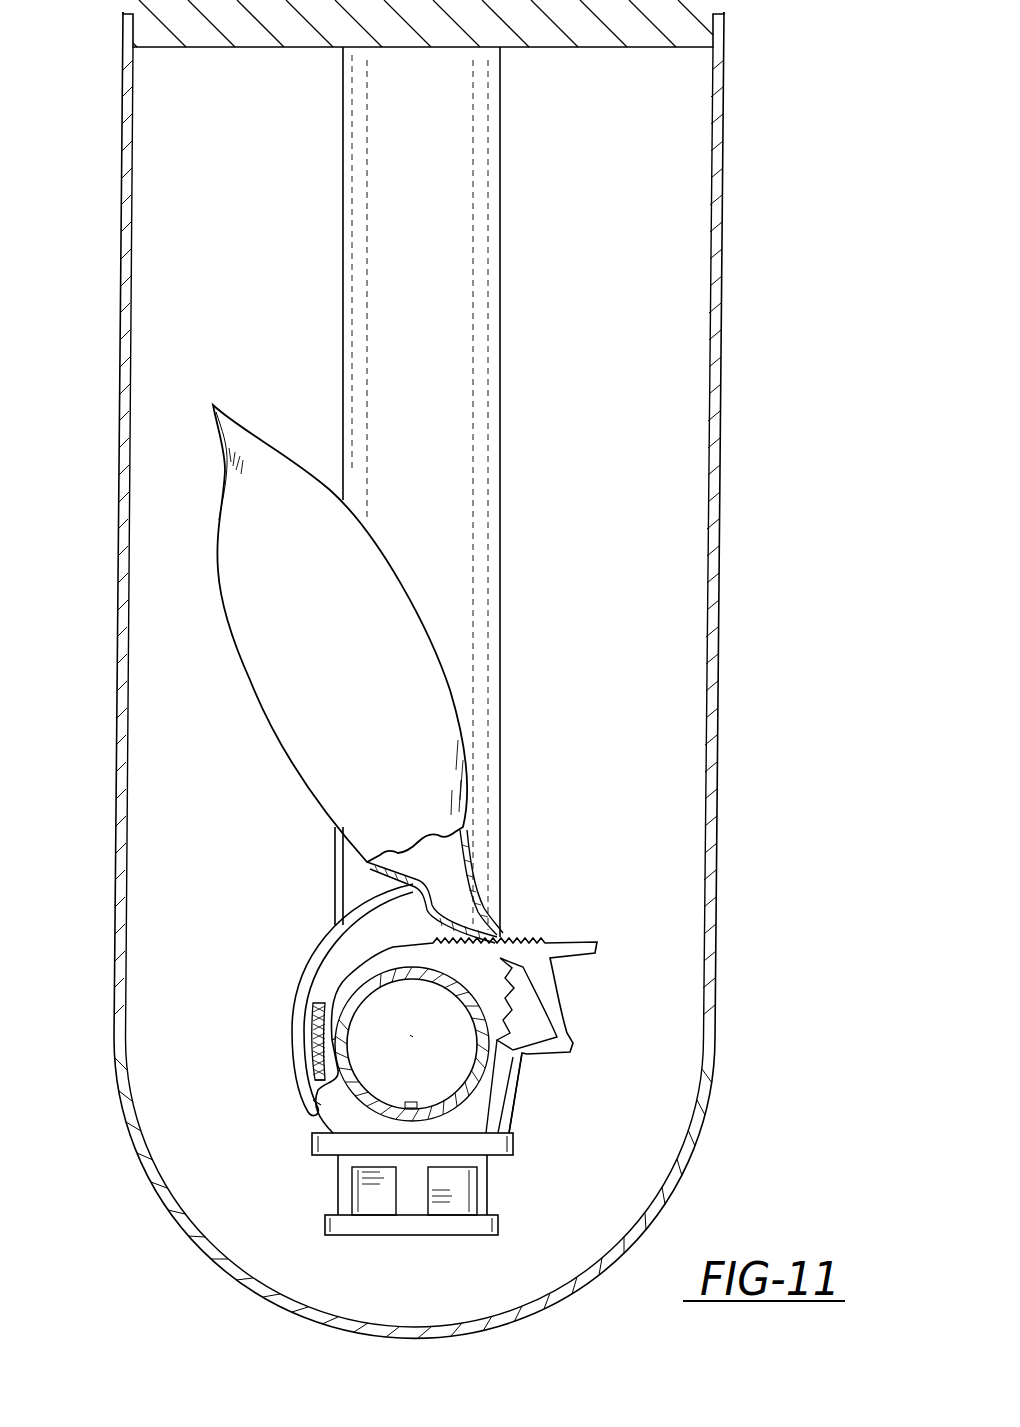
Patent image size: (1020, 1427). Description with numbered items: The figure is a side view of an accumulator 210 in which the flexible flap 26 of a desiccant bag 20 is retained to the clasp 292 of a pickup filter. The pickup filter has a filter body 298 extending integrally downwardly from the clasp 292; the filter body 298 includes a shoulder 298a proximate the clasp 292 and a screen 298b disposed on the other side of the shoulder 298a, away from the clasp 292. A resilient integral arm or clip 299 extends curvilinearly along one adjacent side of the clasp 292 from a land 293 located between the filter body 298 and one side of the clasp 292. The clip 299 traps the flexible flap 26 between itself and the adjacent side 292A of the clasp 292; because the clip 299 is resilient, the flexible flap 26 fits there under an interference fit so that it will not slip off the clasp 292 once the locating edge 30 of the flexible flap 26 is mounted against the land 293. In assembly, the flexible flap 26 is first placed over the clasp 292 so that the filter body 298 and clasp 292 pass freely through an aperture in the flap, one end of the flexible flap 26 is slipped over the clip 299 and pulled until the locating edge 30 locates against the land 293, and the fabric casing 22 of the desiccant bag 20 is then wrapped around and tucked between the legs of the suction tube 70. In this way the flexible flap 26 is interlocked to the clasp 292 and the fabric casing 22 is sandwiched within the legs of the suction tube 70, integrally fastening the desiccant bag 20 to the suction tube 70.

The accumulator 210 is at (780, 390).
The suction tube 70 is at (475, 282).
The fabric casing 22 is at (393, 628).
The desiccant bag 20 is at (236, 699).
The clip 299 is at (307, 969).
The flexible flap 26 is at (320, 1012).
The clasp 292 is at (487, 1085).
The adjacent side of the clasp 292A is at (330, 1038).
The land 293 is at (317, 1080).
The locating edge 30 is at (323, 1100).
The shoulder 298a is at (505, 1143).
The screen 298b is at (456, 1183).
The filter body 298 is at (494, 1222).